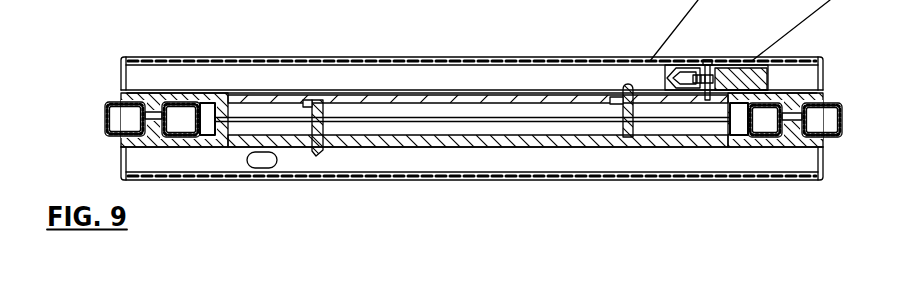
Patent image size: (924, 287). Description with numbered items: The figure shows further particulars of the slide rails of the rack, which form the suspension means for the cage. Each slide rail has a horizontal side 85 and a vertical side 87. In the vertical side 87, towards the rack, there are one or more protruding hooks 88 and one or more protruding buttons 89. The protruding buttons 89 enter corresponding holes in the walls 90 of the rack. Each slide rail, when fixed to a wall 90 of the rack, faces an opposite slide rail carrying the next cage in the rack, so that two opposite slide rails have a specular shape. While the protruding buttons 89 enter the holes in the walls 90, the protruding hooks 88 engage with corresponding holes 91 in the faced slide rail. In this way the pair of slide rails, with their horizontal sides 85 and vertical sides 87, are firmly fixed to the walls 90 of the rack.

The horizontal side 85 is at (418, 78).
The vertical side 87 is at (264, 100).
The protruding hook 88 is at (321, 100).
The protruding button 89 is at (123, 89).
The wall 90 is at (105, 119).
The hole 91 is at (330, 141).